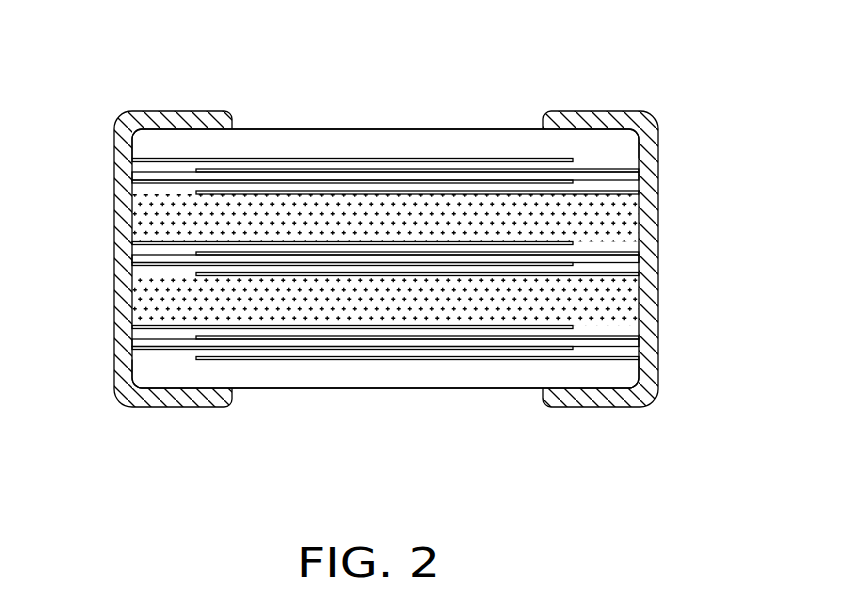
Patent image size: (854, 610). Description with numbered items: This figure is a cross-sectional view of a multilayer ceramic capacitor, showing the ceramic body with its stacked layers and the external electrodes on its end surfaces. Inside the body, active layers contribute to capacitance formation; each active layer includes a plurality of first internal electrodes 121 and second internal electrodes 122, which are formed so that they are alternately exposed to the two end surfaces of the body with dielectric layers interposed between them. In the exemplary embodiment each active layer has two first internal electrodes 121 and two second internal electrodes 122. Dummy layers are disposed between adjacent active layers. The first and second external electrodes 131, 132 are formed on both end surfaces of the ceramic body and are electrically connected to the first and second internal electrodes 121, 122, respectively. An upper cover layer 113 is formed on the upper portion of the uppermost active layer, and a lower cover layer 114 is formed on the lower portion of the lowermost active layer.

The upper cover layer 113 is at (300, 142).
The lower cover layer 114 is at (441, 376).
The first internal electrode 121 is at (238, 159).
The second internal electrode 122 is at (367, 170).
The first external electrode 131 is at (163, 117).
The second external electrode 132 is at (612, 112).